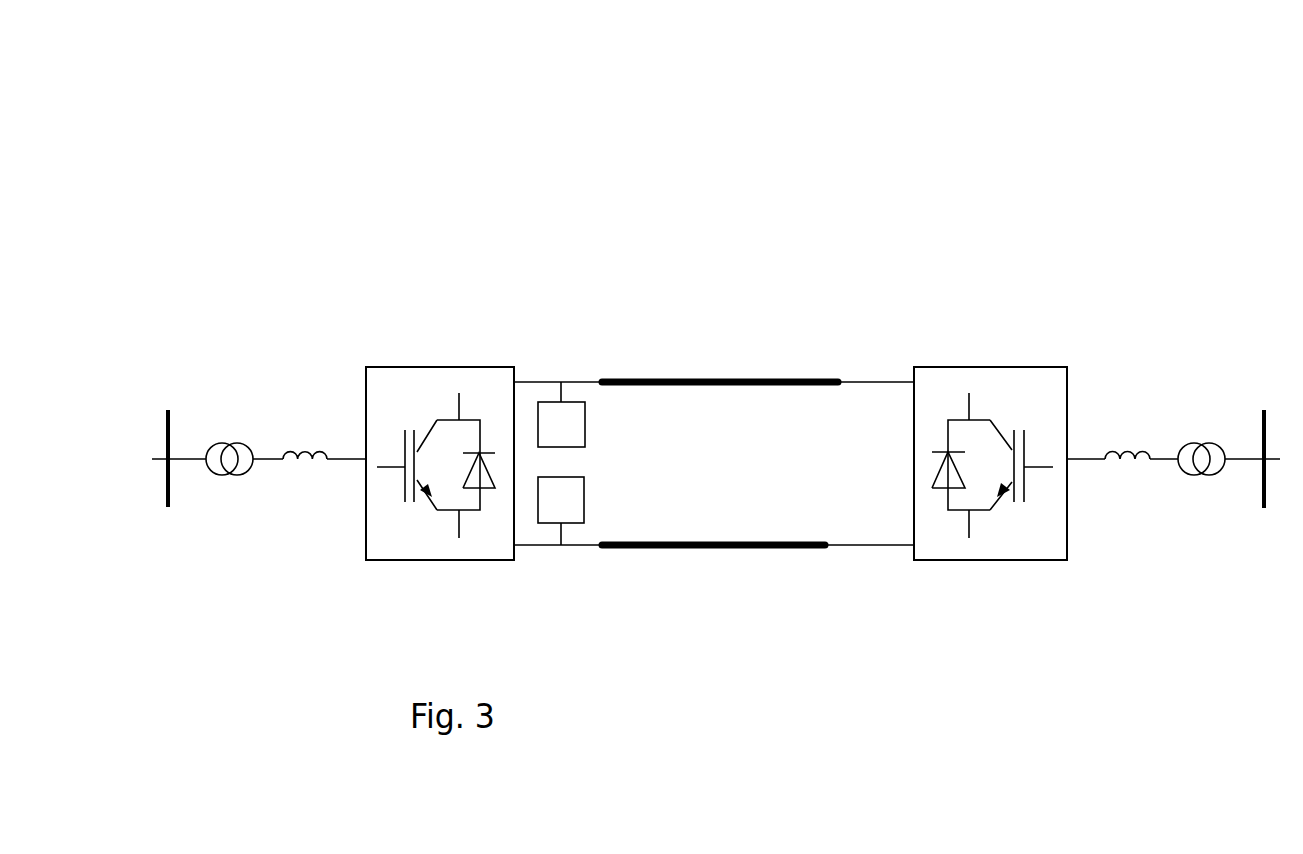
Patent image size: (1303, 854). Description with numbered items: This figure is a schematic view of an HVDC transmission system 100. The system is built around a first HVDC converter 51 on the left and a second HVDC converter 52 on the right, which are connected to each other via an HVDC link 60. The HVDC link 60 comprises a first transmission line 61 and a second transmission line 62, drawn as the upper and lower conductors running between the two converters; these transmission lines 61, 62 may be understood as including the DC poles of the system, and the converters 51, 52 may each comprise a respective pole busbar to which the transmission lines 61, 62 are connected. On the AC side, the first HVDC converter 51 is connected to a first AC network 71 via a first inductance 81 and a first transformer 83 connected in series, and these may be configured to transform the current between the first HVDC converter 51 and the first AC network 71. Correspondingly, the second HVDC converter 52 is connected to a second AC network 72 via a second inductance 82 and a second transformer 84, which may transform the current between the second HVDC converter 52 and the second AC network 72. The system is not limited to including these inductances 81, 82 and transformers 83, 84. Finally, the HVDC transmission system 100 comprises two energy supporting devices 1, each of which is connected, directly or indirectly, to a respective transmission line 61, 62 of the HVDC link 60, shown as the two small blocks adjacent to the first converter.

The HVDC transmission system 100 is at (284, 151).
The energy supporting device 1 is at (585, 432).
The first HVDC converter 51 is at (447, 367).
The second HVDC converter 52 is at (998, 367).
The HVDC link 60 is at (696, 328).
The first transmission line 61 is at (812, 378).
The second transmission line 62 is at (800, 548).
The first AC network 71 is at (166, 424).
The second AC network 72 is at (1263, 424).
The first inductance 81 is at (300, 416).
The second inductance 82 is at (1120, 416).
The first transformer 83 is at (218, 415).
The second transformer 84 is at (1190, 416).